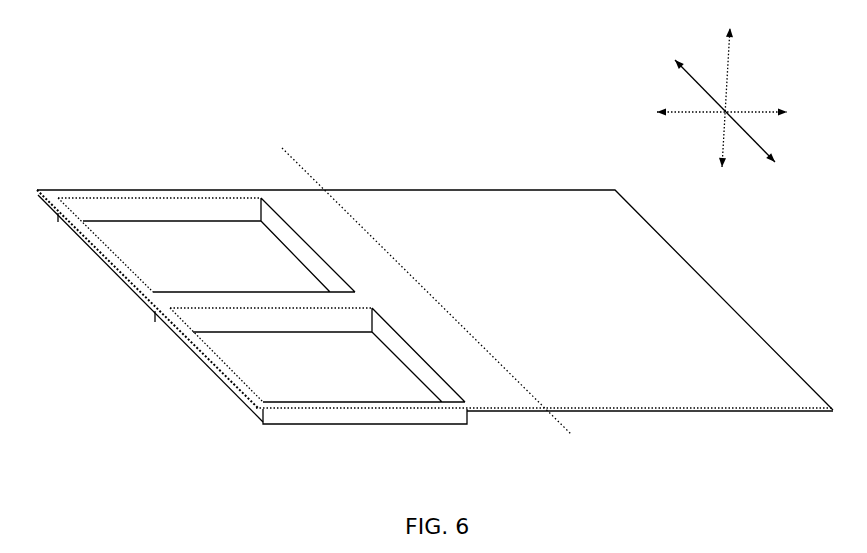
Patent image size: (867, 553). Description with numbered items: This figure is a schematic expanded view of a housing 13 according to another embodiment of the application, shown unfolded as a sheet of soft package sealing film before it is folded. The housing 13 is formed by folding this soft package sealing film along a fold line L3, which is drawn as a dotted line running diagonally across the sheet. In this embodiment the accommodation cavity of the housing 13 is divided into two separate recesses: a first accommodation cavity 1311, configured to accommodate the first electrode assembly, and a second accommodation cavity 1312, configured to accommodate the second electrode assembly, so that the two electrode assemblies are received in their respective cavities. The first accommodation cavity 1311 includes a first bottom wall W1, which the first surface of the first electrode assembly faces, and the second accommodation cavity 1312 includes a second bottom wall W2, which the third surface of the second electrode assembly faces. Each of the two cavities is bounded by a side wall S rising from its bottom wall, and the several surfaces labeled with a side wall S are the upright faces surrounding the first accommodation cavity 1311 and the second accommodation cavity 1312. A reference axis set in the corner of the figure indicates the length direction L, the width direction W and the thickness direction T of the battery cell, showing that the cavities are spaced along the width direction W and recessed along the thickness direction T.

The housing 13 is at (165, 376).
The first accommodation cavity 1311 is at (131, 239).
The second accommodation cavity 1312 is at (348, 341).
The first bottom wall W1 is at (193, 232).
The second bottom wall W2 is at (351, 390).
The side wall S is at (96, 232).
The fold line L3 is at (438, 299).
The thickness direction T is at (731, 95).
The length direction L is at (729, 112).
The width direction W is at (735, 117).